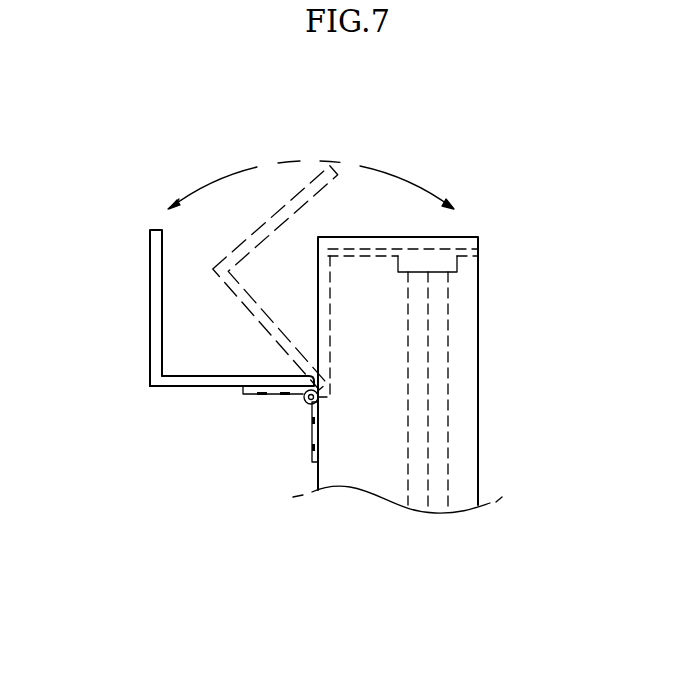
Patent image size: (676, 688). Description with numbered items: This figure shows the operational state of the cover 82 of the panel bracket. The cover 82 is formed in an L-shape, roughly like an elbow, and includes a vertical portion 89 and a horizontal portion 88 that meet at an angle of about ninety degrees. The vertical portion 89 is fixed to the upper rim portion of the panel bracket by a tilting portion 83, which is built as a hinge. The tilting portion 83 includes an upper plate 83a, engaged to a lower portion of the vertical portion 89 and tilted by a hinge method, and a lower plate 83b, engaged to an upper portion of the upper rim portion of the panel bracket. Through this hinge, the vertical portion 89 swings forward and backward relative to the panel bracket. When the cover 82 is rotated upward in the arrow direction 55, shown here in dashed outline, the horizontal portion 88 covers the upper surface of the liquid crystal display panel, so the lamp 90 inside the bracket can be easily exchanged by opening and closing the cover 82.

The arrow direction 55 is at (330, 158).
The cover 82 is at (186, 313).
The horizontal portion 88 is at (156, 349).
The vertical portion 89 is at (180, 386).
The tilting portion 83 is at (253, 437).
The upper plate 83a is at (277, 394).
The lower plate 83b is at (313, 430).
The lamp 90 is at (458, 263).